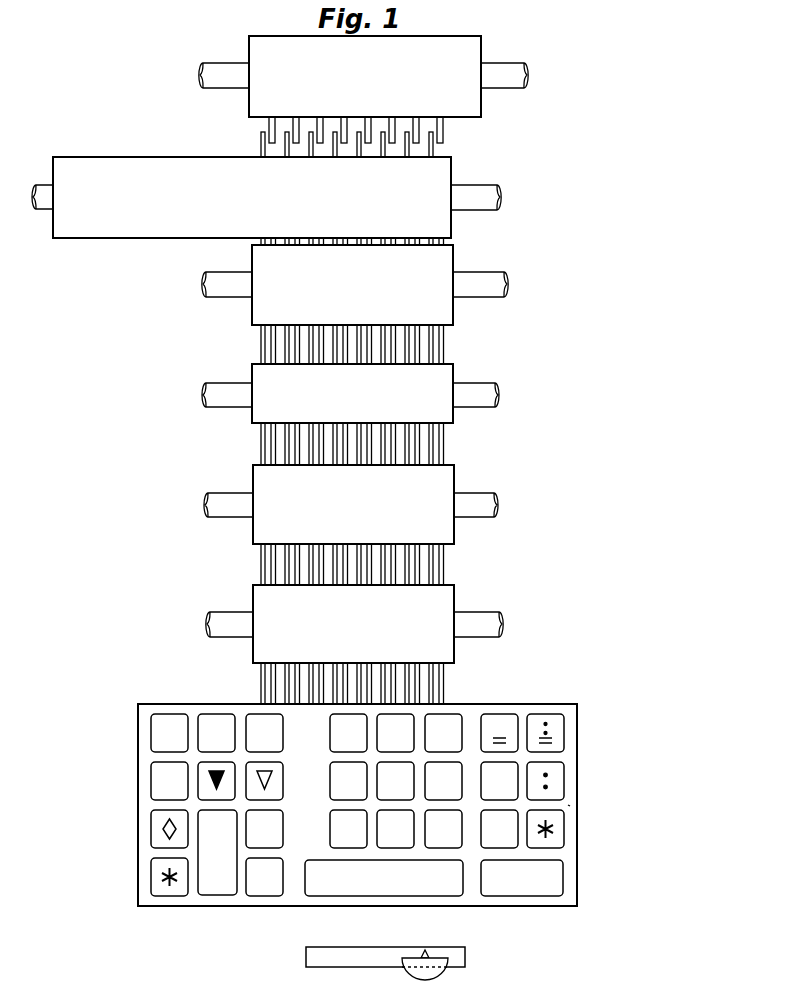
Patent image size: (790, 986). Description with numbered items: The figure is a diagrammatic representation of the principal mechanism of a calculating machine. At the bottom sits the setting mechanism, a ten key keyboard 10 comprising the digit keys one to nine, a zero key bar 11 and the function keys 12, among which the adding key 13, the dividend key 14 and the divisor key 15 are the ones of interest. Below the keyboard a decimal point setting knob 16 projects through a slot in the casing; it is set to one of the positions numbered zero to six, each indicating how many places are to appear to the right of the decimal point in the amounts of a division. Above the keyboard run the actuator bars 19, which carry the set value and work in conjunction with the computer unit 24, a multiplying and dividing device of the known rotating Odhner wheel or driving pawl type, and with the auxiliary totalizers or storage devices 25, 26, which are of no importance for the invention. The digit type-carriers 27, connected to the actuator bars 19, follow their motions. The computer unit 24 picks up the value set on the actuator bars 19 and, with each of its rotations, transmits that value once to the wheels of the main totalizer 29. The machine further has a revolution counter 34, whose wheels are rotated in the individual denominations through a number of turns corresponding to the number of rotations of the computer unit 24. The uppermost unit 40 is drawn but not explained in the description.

The ten key keyboard 10 is at (335, 806).
The zero key bar 11 is at (315, 882).
The function keys 12 is at (568, 805).
The adding key 13 is at (558, 840).
The dividend key 14 is at (555, 778).
The divisor key 15 is at (560, 730).
The decimal point setting knob 16 is at (428, 972).
The actuator bars 19 is at (290, 571).
The computer unit 24 is at (440, 297).
The auxiliary totalizer or storage device 25 is at (442, 531).
The auxiliary totalizer or storage device 26 is at (442, 649).
The digit type-carriers 27 is at (322, 132).
The main totalizer 29 is at (440, 224).
The revolution counter 34 is at (440, 413).
The printing unit 40 is at (460, 100).